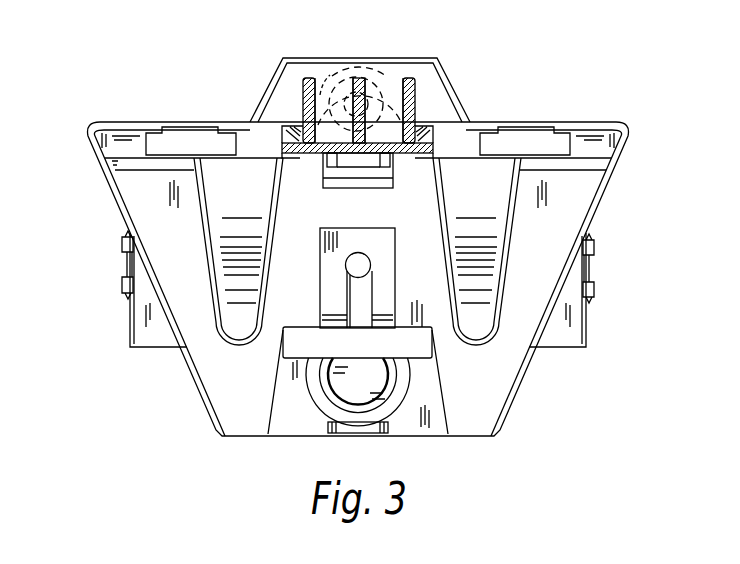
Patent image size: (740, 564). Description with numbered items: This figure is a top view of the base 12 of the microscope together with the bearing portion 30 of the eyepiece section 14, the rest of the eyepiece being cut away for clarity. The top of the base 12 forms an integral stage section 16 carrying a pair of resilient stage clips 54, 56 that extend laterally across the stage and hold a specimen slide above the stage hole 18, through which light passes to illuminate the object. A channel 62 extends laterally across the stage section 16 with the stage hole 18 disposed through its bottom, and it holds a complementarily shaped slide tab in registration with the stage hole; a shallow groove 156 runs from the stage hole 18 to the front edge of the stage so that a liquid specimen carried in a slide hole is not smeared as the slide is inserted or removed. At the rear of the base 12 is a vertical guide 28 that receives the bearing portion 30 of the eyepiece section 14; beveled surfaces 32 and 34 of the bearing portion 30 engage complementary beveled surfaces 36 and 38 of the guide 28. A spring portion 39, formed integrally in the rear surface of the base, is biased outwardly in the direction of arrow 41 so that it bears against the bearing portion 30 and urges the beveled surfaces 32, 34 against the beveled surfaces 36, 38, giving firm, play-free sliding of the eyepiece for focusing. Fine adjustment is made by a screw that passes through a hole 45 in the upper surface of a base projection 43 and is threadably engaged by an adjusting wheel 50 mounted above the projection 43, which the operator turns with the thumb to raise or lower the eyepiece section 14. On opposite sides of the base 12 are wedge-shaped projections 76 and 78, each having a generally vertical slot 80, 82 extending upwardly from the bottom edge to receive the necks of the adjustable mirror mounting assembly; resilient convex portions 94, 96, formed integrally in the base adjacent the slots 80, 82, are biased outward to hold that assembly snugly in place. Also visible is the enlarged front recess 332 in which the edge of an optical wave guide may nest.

The base 12 is at (532, 369).
The eyepiece section 14 is at (298, 82).
The stage section 16 is at (591, 190).
The stage hole 18 is at (372, 262).
The vertical guide 28 is at (422, 118).
The bearing portion 30 is at (328, 138).
The beveled surface 32 is at (292, 155).
The beveled surface 34 is at (424, 155).
The beveled surface 36 is at (300, 146).
The beveled surface 38 is at (416, 146).
The spring portion 39 is at (372, 163).
The arrow 41 is at (358, 158).
The base projection 43 is at (436, 60).
The hole 45 is at (328, 82).
The adjusting wheel 50 is at (340, 88).
The stage clip 54 is at (253, 203).
The stage clip 56 is at (488, 203).
The channel 62 is at (322, 285).
The wedge-shaped projection 76 is at (128, 315).
The wedge-shaped projection 78 is at (580, 336).
The vertical slot 80 is at (126, 264).
The vertical slot 82 is at (591, 266).
The resilient convex portion 94 is at (122, 242).
The resilient convex portion 96 is at (595, 247).
The shallow groove 156 is at (378, 288).
The enlarged front recess 332 is at (388, 424).